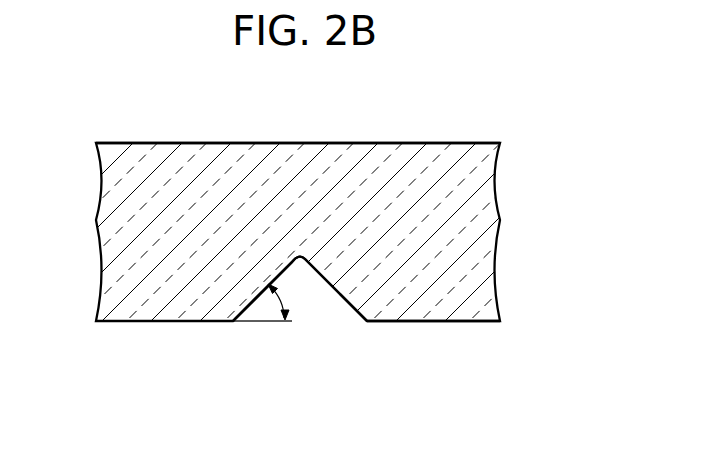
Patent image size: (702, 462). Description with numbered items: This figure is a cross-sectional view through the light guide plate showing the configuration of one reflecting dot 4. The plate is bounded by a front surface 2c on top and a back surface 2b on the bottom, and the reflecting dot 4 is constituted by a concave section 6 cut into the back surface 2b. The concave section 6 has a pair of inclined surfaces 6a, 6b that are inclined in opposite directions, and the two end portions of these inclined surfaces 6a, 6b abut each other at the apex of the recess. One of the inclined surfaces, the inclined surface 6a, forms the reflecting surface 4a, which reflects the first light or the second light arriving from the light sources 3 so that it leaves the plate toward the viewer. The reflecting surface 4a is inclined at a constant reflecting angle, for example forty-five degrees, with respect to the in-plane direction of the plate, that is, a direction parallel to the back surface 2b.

The light source 3 is at (491, 232).
The back surface 2b is at (457, 323).
The front surface 2c is at (455, 142).
The reflecting dot 4 is at (323, 266).
The reflecting surface 4a is at (275, 272).
The concave section 6 is at (327, 301).
The inclined surface 6a is at (254, 308).
The inclined surface 6b is at (348, 306).